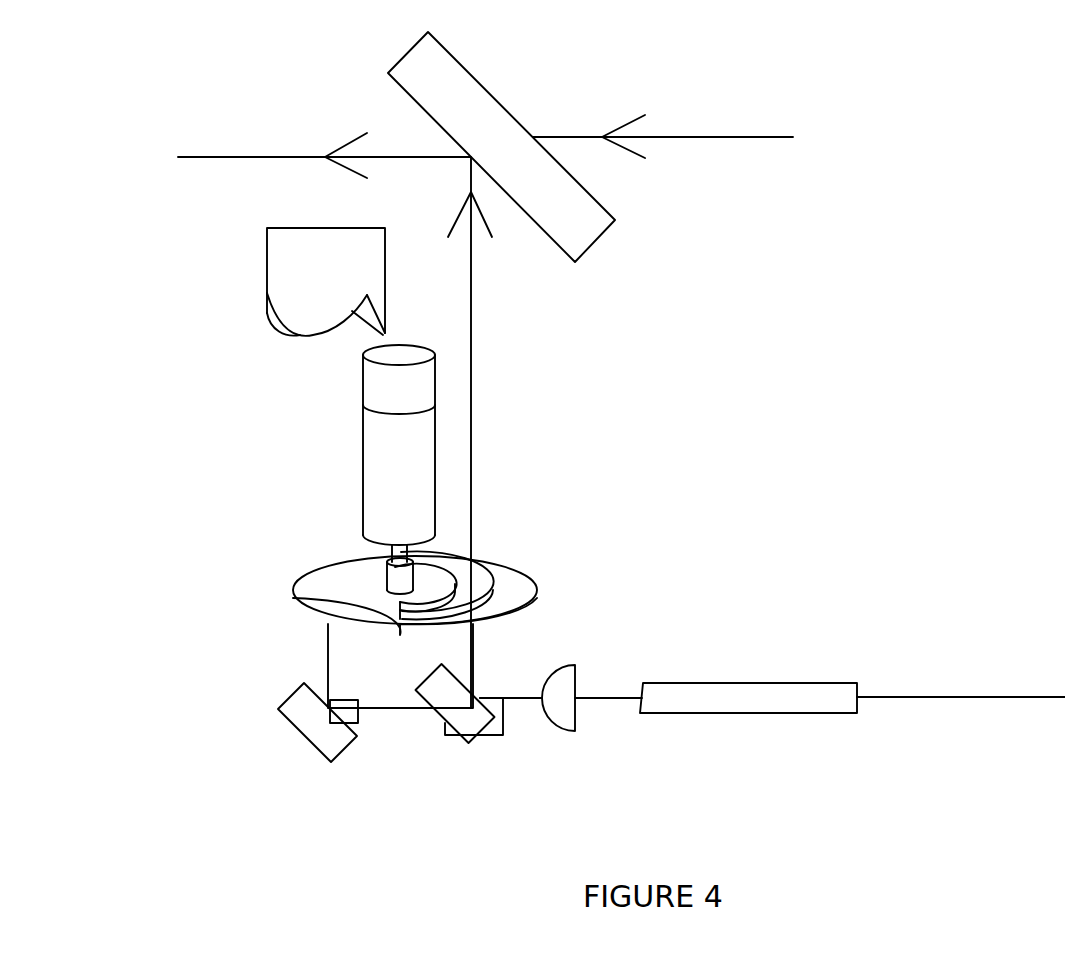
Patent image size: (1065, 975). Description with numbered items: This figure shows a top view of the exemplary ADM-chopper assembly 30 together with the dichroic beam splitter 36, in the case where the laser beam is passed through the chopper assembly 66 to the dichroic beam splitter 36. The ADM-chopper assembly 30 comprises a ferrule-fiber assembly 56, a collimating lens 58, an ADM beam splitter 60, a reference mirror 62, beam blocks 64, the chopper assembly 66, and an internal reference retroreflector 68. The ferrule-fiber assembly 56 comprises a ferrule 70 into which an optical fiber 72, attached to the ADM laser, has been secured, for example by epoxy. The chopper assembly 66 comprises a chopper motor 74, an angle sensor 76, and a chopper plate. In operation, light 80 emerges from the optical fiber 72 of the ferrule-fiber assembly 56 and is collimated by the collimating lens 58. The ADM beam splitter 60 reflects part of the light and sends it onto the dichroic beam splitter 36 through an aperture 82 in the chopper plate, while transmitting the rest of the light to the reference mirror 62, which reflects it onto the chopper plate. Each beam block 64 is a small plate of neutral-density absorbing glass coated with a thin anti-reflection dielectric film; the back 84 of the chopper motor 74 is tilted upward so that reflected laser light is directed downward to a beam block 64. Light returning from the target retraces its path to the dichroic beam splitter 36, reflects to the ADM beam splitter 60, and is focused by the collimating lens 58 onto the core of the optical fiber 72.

The ADM-chopper assembly 30 is at (797, 298).
The dichroic beam splitter 36 is at (467, 70).
The ferrule-fiber assembly 56 is at (929, 530).
The collimating lens 58 is at (575, 665).
The ADM beam splitter 60 is at (470, 742).
The reference mirror 62 is at (315, 750).
The beam blocks 64 is at (358, 723).
The chopper assembly 66 is at (525, 568).
The internal reference retroreflector 68 is at (267, 257).
The ferrule 70 is at (755, 682).
The optical fiber 72 is at (938, 697).
The chopper motor 74 is at (363, 462).
The angle sensor 76 is at (363, 375).
The light 80 is at (600, 699).
The aperture 82 is at (485, 590).
The back of the chopper motor 84 is at (362, 422).